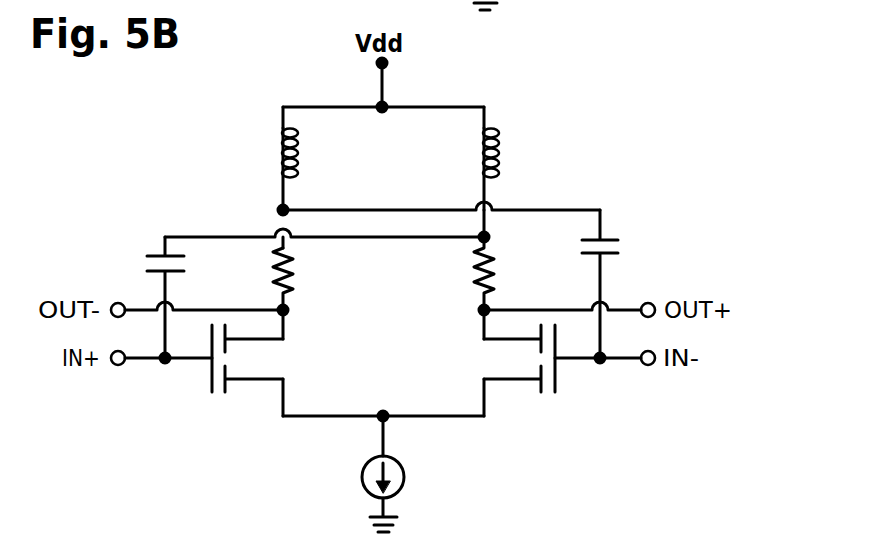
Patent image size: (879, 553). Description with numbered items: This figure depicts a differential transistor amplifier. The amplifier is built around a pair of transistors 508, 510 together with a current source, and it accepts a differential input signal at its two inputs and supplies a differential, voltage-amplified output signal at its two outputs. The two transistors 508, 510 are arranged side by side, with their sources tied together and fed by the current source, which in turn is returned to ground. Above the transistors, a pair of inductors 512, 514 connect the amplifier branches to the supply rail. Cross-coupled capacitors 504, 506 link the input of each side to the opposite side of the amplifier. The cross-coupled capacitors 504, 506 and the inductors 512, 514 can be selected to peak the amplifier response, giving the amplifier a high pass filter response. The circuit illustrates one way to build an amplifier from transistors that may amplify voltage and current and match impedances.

The cross-coupled capacitor 504 is at (158, 251).
The cross-coupled capacitor 506 is at (607, 235).
The transistor 508 is at (273, 357).
The transistor 510 is at (495, 357).
The inductor 512 is at (297, 152).
The inductor 514 is at (498, 152).